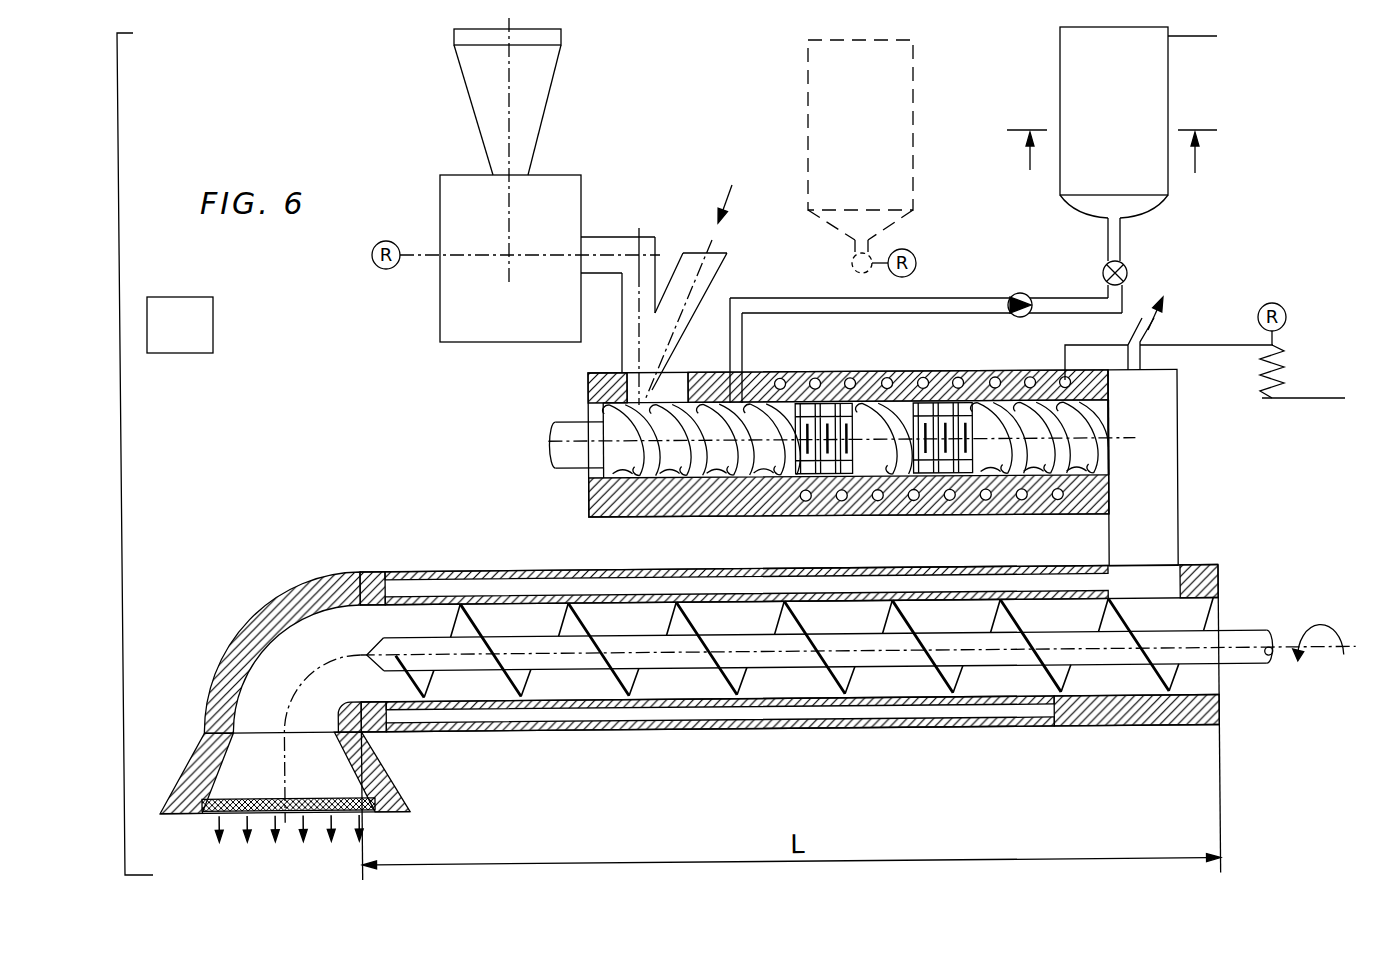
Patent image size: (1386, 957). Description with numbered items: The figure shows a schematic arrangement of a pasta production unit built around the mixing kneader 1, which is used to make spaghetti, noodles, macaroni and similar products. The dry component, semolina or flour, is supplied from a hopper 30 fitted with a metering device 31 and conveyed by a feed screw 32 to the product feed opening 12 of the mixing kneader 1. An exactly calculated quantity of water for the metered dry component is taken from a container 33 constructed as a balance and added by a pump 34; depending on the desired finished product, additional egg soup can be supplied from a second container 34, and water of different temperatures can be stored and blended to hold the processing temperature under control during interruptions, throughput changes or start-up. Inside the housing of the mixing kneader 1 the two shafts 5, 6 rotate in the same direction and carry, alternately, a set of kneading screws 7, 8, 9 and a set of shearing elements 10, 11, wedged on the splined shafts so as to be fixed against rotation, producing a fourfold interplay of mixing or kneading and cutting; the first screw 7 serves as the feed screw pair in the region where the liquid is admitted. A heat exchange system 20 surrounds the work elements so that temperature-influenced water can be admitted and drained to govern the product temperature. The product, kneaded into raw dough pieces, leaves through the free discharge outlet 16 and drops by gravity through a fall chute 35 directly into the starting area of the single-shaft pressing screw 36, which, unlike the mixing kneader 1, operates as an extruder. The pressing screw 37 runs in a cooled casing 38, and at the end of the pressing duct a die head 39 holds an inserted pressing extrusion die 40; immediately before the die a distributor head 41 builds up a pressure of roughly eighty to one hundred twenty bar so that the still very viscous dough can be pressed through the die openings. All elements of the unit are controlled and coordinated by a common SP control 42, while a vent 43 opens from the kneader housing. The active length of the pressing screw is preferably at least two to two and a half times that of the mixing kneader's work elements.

The mixing kneader 1 is at (875, 443).
The shaft 5 is at (797, 442).
The shaft 6 is at (560, 422).
The kneading screw 7 is at (672, 475).
The kneading screw 8 is at (880, 470).
The kneading screw 9 is at (1040, 470).
The shearing element 10 is at (815, 470).
The shearing element 11 is at (937, 470).
The product feed opening 12 is at (633, 337).
The free discharge outlet 16 is at (1108, 402).
The heat exchange system 20 is at (923, 378).
The hopper 30 is at (539, 73).
The metering device 31 is at (565, 195).
The feed screw 32 is at (630, 240).
The container 33 is at (1145, 105).
The pump 34 is at (895, 112).
The fall chute 35 is at (1157, 525).
The single-shaft pressing screw 36 is at (859, 721).
The conveyor screw 37 is at (988, 640).
The cooled casing 38 is at (615, 733).
The die head 39 is at (385, 780).
The pressing extrusion die 40 is at (210, 805).
The distributor head 41 is at (233, 762).
The SP control 42 is at (167, 341).
The vent 43 is at (1128, 318).